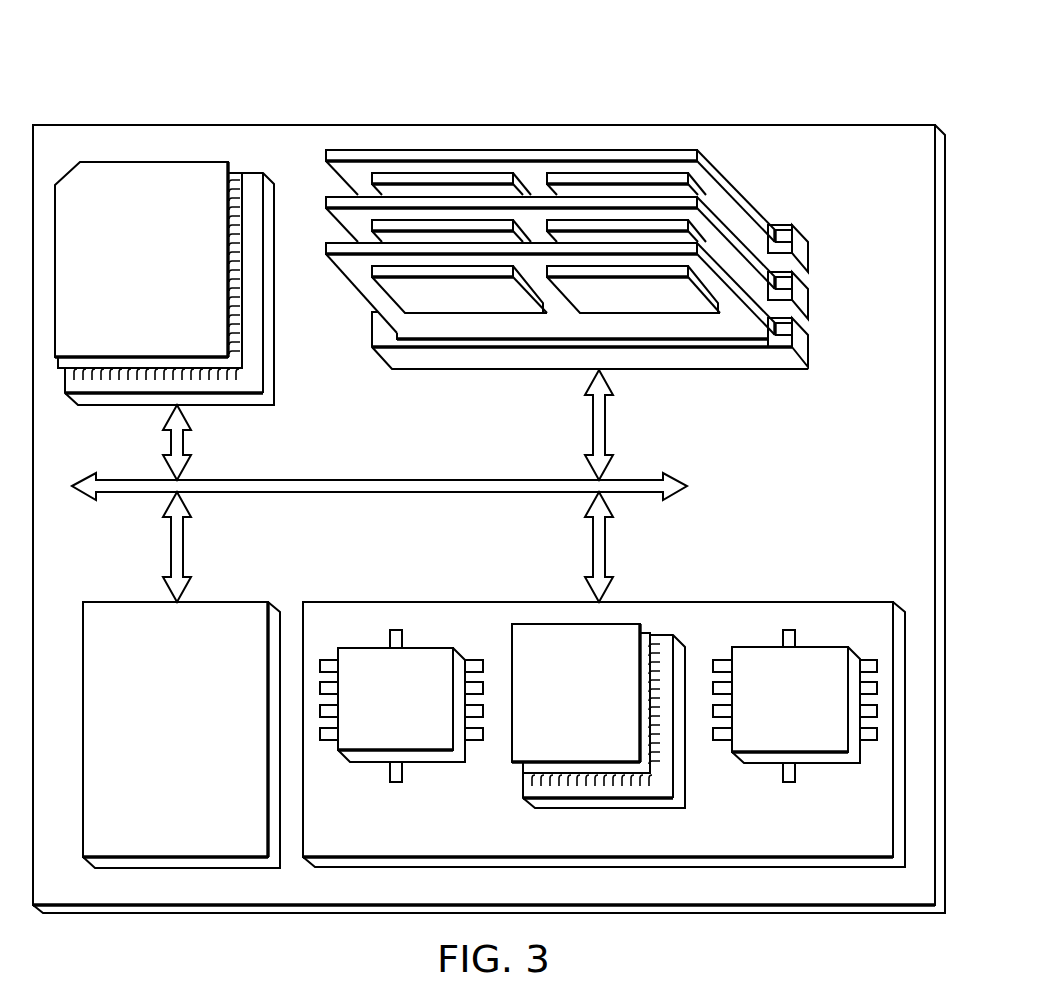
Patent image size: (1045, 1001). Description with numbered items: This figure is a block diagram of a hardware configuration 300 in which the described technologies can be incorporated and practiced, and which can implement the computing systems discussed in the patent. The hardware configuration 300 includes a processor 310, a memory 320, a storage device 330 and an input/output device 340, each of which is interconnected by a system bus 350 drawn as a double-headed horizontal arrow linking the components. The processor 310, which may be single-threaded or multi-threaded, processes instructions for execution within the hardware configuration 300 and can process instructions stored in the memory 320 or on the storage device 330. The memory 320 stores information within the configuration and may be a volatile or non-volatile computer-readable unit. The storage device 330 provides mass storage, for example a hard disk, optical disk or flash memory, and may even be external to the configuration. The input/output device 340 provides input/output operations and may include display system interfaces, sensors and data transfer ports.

The hardware configuration 300 is at (240, 61).
The processor 310 is at (165, 294).
The memory 320 is at (737, 190).
The storage device 330 is at (200, 791).
The input/output device 340 is at (781, 594).
The system bus 350 is at (380, 493).